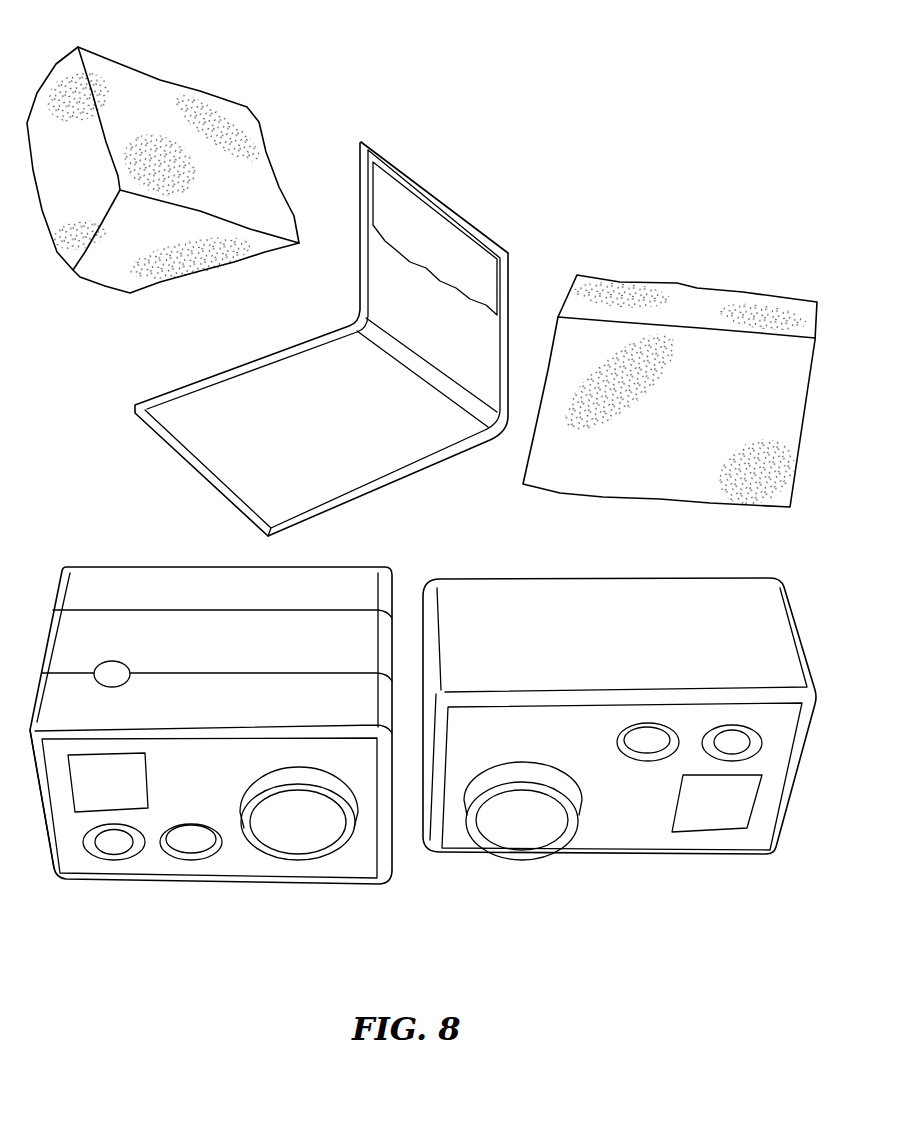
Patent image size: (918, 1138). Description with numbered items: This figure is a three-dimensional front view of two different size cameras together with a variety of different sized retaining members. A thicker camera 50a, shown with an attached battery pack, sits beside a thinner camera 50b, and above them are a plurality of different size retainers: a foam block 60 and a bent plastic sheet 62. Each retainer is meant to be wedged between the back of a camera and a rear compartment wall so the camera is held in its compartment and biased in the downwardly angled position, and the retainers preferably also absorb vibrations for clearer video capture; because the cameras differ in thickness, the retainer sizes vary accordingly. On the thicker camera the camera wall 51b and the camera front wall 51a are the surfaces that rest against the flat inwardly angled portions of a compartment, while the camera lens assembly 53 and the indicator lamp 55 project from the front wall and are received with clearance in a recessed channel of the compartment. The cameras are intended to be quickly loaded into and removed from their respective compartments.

The foam block 60 is at (170, 92).
The bent sheet 62 is at (283, 367).
The thicker camera 50a is at (223, 717).
The thinner camera 50b is at (497, 593).
The camera front wall 51a is at (373, 803).
The camera wall 51b is at (70, 833).
The camera lens assembly 53 is at (302, 823).
The indicator lamp 55 is at (183, 842).